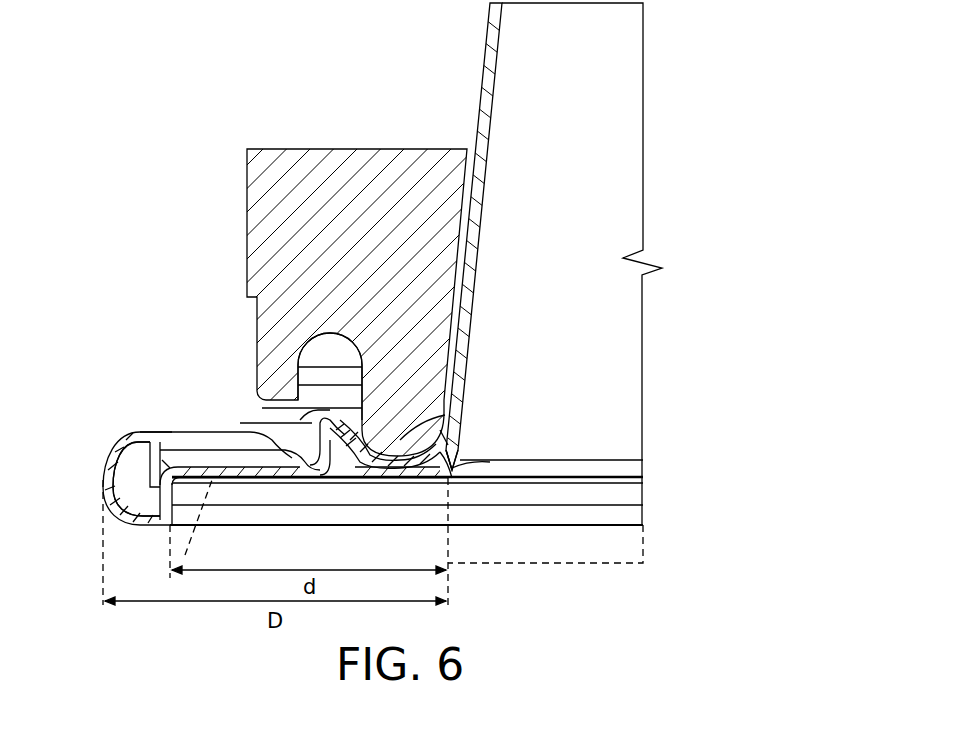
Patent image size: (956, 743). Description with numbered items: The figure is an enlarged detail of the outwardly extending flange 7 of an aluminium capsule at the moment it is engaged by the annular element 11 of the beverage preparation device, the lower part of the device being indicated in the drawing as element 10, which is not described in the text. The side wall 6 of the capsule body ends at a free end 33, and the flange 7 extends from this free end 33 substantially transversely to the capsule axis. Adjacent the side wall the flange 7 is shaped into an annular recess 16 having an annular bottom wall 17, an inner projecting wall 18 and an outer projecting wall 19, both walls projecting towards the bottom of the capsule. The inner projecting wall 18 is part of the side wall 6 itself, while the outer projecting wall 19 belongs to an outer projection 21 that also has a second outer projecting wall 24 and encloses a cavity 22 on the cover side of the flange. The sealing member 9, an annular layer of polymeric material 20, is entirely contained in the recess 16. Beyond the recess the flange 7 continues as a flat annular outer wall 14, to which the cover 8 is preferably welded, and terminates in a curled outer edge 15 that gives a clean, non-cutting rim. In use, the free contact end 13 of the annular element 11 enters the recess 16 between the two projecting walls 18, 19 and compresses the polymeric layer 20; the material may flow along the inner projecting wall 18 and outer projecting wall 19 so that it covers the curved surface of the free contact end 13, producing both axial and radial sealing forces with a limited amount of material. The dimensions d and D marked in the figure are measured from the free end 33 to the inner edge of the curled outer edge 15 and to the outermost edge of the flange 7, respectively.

The side wall 6 is at (488, 50).
The outwardly extending flange 7 is at (187, 436).
The cover 8 is at (606, 477).
The sealing member 9 is at (436, 437).
The frame 10 is at (644, 540).
The annular element 11 is at (252, 270).
The free contact end 13 is at (404, 437).
The annular outer wall 14 is at (272, 484).
The curled outer edge 15 is at (106, 472).
The annular recess 16 is at (347, 426).
The annular bottom wall 17 is at (450, 479).
The inner projecting wall 18 is at (455, 448).
The outer projecting wall 19 is at (360, 484).
The annular layer of polymeric material 20 is at (432, 484).
The outer projection 21 is at (310, 409).
The cavity 22 is at (337, 476).
The second outer projecting wall 24 is at (292, 456).
The free end 33 is at (450, 468).